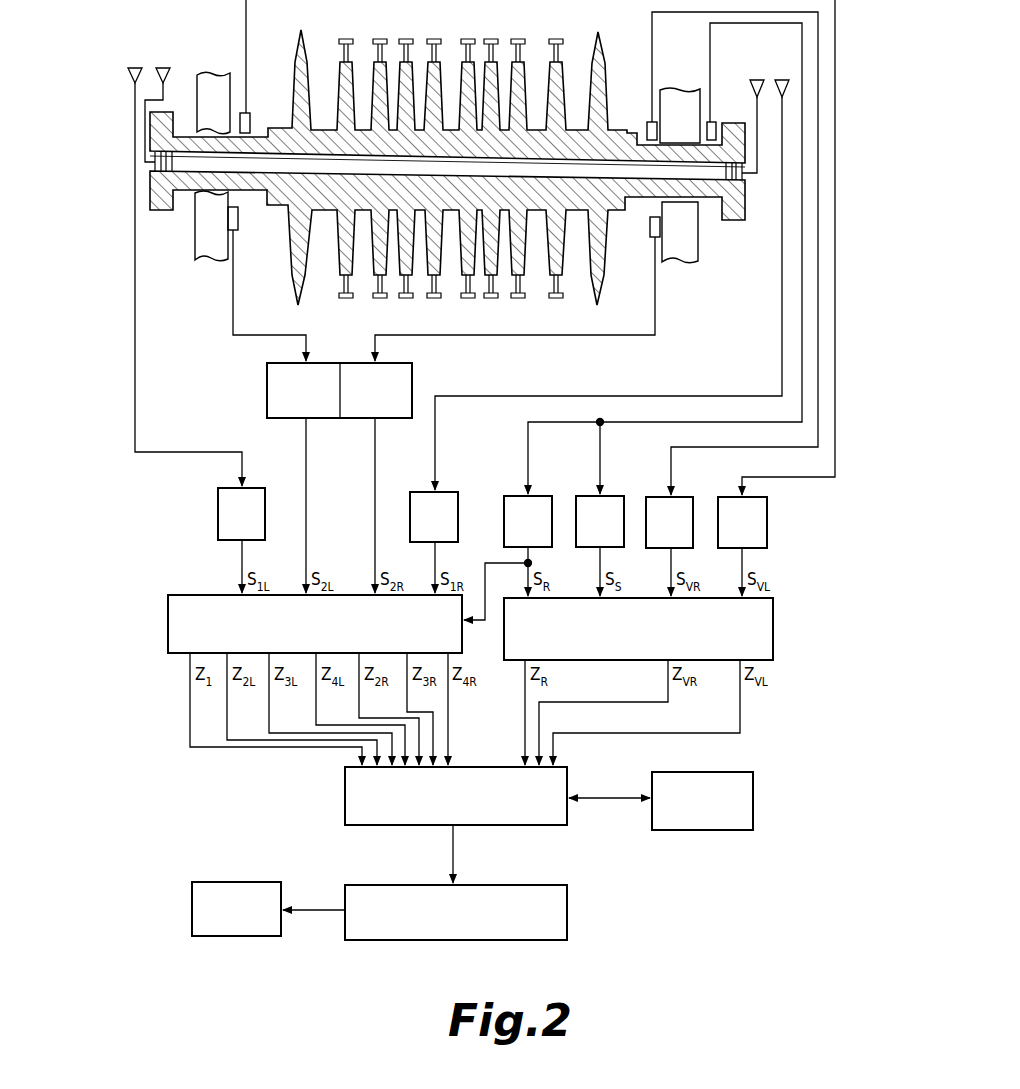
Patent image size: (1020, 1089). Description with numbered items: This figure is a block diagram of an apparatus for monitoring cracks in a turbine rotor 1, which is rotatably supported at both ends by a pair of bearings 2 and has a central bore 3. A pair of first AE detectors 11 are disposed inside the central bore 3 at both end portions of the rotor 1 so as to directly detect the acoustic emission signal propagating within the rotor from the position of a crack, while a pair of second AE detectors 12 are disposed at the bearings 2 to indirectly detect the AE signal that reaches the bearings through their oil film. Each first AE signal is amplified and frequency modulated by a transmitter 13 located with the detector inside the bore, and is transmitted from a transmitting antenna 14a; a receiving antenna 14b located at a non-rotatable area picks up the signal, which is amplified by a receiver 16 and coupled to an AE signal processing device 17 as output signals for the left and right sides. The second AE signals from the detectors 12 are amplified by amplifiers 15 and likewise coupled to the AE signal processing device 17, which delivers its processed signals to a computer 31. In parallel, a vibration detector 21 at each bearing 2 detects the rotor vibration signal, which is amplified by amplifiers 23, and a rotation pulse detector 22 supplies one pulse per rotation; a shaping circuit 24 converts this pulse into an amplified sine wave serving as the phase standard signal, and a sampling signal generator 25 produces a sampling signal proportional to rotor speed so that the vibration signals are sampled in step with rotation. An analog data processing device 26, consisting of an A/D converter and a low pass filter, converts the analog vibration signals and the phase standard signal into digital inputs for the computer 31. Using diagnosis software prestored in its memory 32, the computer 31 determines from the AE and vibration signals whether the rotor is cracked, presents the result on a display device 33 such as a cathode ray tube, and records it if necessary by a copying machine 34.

The rotor 1 is at (452, 92).
The bearings 2 is at (210, 260).
The central bore 3 is at (320, 170).
The first AE detector 11 is at (178, 192).
The second AE detector 12 is at (240, 222).
The transmitter 13 is at (163, 212).
The transmitting antenna 14a is at (167, 66).
The receiving antenna 14b is at (138, 66).
The amplifiers 15 is at (357, 363).
The receiver 16 is at (256, 492).
The AE signal processing device 17 is at (180, 622).
The vibration detector 21 is at (252, 122).
The rotation pulse detector 22 is at (702, 117).
The amplifiers 23 is at (658, 498).
The shaping circuit 24 is at (510, 497).
The sampling signal generator 25 is at (588, 498).
The analog data processing device 26 is at (773, 635).
The computer 31 is at (362, 792).
The memory 32 is at (753, 803).
The display device 33 is at (552, 917).
The copying machine 34 is at (192, 910).